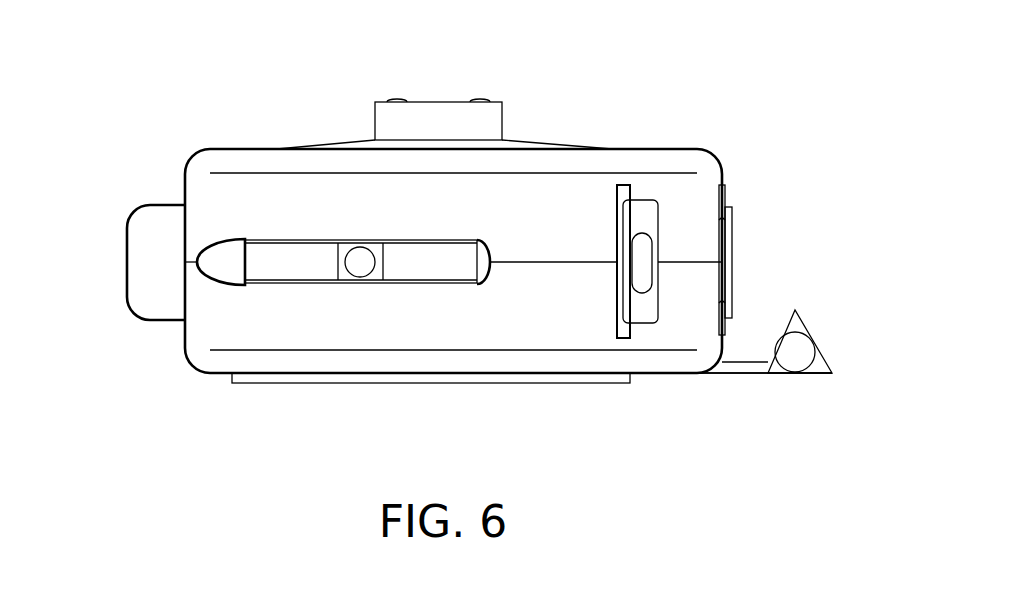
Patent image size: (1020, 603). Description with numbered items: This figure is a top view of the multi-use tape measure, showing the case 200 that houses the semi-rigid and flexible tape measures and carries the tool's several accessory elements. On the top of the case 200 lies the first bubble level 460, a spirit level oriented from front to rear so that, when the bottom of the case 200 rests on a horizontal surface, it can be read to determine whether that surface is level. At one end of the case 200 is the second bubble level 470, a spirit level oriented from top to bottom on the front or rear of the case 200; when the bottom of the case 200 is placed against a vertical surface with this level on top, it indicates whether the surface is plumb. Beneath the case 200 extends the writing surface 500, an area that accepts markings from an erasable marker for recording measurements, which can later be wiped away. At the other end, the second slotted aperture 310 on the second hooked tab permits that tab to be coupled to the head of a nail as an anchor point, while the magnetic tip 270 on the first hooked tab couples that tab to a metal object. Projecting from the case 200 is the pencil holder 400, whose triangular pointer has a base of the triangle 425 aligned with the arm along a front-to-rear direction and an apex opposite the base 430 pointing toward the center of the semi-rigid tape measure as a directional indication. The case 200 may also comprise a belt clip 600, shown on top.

The case 200 is at (688, 149).
The magnetic tip 270 is at (732, 222).
The second slotted aperture 310 is at (639, 233).
The pencil holder 400 is at (817, 352).
The base of the triangle 425 is at (815, 377).
The apex opposite the base 430 is at (795, 307).
The first bubble level 460 is at (352, 314).
The second bubble level 470 is at (101, 264).
The writing surface 500 is at (578, 383).
The belt clip 600 is at (432, 100).